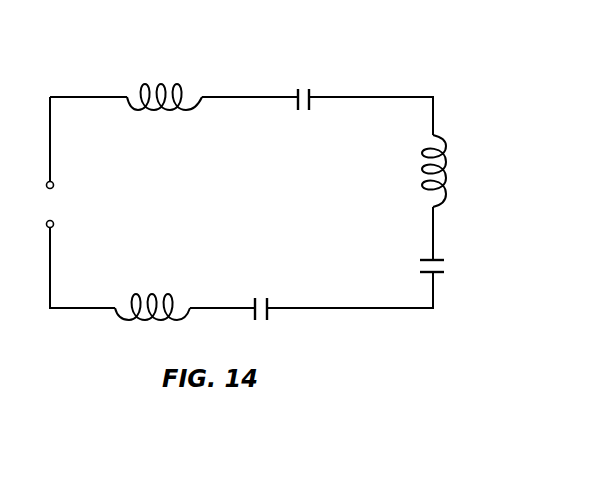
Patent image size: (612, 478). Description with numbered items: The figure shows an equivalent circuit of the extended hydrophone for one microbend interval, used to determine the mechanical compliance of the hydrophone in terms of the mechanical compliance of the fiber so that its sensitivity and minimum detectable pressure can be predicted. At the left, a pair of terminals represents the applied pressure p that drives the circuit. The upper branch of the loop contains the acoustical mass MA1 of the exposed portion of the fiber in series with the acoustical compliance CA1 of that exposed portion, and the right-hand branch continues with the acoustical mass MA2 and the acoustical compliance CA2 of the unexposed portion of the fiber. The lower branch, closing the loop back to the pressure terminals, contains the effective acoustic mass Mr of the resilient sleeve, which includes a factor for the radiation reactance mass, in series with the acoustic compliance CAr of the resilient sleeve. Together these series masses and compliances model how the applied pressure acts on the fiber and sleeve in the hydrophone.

The acoustical mass of exposed fiber portion MA1 is at (164, 113).
The acoustical compliance of exposed fiber portion CA1 is at (307, 115).
The acoustical mass of unexposed fiber portion MA2 is at (456, 171).
The acoustical compliance of unexposed fiber portion CA2 is at (454, 267).
The effective acoustic mass of resilient sleeve Mr is at (152, 322).
The acoustic compliance of resilient sleeve CAr is at (265, 324).
The applied pressure p is at (49, 205).